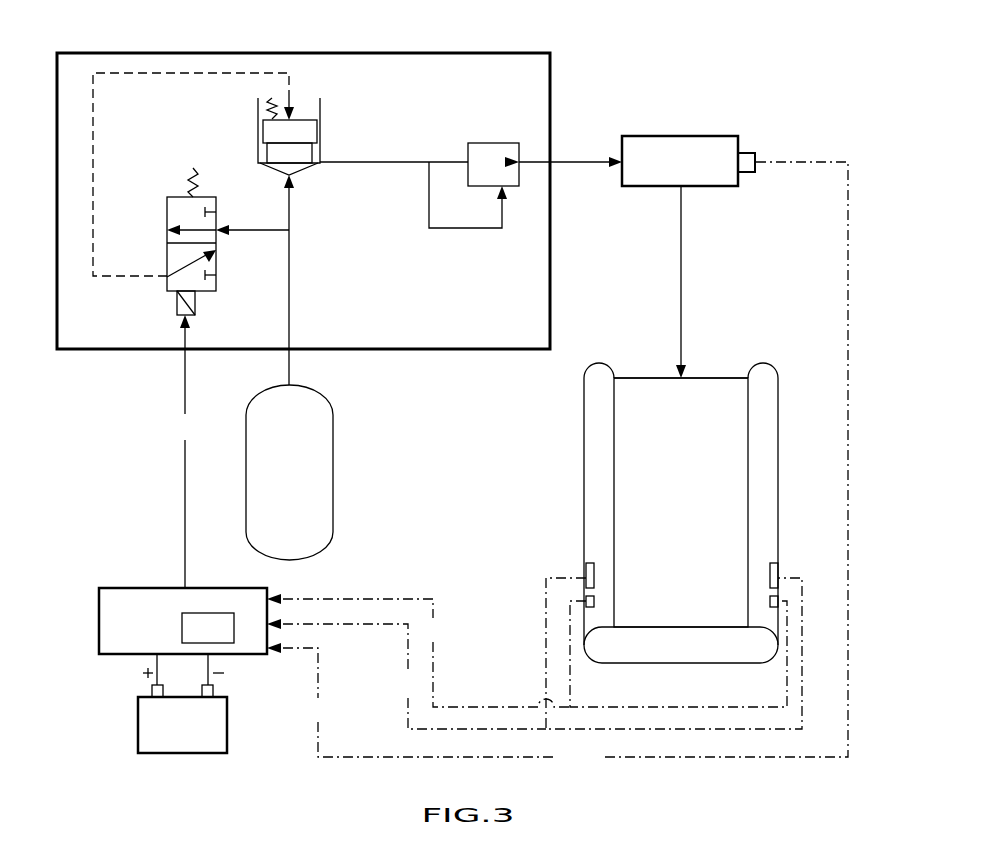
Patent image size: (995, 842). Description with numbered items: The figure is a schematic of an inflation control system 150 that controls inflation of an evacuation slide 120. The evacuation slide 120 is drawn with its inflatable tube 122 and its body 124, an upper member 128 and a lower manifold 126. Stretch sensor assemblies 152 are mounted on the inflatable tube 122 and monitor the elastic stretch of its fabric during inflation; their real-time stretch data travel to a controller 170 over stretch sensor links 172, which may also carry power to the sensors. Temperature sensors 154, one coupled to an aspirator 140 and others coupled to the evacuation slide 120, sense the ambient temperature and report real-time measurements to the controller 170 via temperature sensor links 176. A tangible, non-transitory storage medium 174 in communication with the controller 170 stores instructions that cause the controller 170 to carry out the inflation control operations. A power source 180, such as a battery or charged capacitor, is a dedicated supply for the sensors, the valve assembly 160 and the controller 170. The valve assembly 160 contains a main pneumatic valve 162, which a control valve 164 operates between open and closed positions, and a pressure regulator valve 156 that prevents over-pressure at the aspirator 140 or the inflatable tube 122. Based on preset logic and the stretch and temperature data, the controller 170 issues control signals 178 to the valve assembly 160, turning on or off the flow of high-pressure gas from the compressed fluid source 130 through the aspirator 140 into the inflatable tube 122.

The evacuation slide 120 is at (675, 489).
The inflatable tube 122 is at (594, 481).
The tank body 124 is at (670, 491).
The bottom manifold 126 is at (668, 653).
The top plate 128 is at (633, 378).
The compressed fluid source 130 is at (271, 483).
The aspirator 140 is at (680, 145).
The inflation control system 150 is at (790, 78).
The stretch sensor assemblies 152 is at (586, 572).
The temperature sensors 154 is at (752, 155).
The pressure regulator valve 156 is at (486, 152).
The valve assembly 160 is at (422, 350).
The main pneumatic valve 162 is at (320, 128).
The control valve 164 is at (168, 196).
The controller 170 is at (130, 588).
The stretch sensor link 172 is at (534, 673).
The storage medium 174 is at (194, 639).
The temperature sensor link 176 is at (557, 459).
The control signals 178 is at (183, 451).
The power source 180 is at (163, 736).